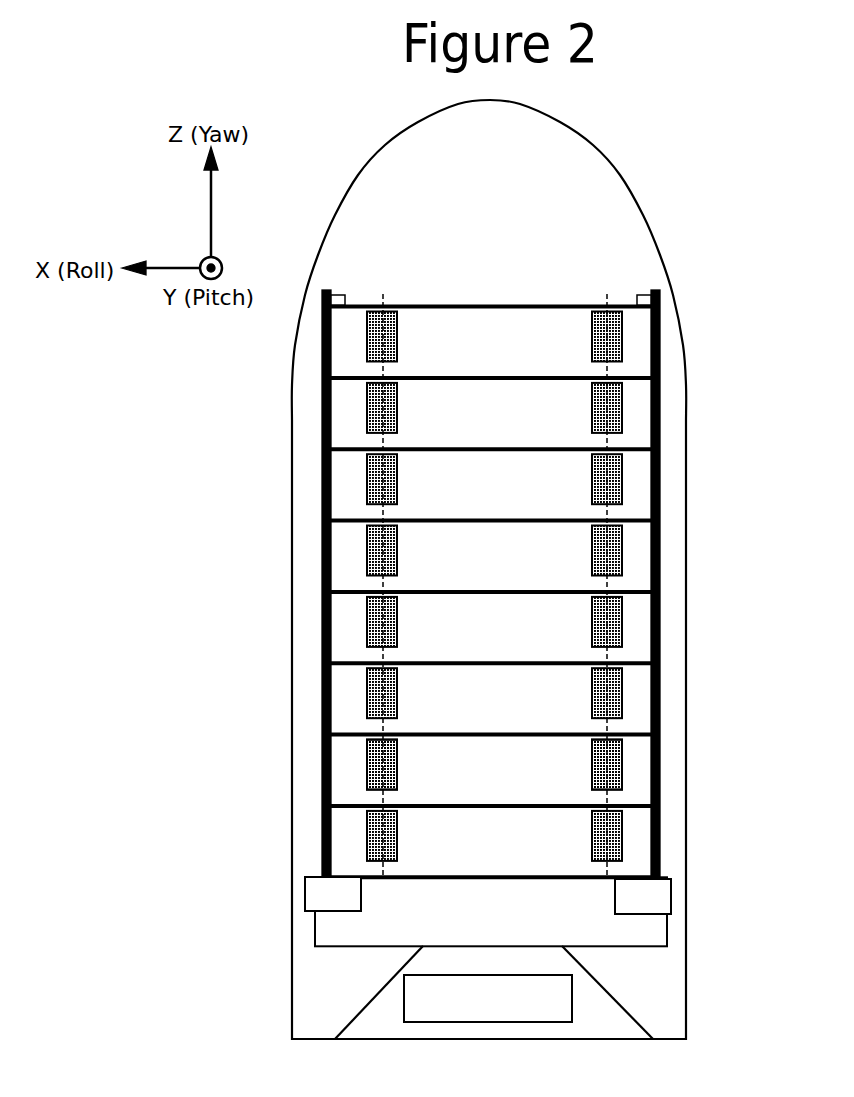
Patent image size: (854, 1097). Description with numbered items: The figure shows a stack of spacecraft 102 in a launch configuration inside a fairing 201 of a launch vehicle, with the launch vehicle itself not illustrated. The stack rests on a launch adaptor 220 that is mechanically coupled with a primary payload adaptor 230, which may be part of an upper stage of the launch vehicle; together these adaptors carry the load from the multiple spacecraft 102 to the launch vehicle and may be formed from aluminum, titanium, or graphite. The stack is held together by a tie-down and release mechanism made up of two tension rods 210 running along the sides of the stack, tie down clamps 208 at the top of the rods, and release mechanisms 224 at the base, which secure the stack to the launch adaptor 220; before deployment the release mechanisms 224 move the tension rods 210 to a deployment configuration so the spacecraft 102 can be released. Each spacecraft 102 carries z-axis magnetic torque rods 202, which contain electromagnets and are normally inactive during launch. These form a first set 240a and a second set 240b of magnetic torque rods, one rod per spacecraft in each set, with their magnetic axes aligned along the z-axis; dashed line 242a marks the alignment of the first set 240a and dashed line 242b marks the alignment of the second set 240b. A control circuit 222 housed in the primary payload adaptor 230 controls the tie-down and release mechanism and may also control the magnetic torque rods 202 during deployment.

The fairing 201 is at (651, 233).
The tension rods 210 is at (322, 446).
The spacecraft 102 is at (478, 341).
The tie down clamps 208 is at (337, 295).
The first set of magnetic torque rods 240a is at (388, 278).
The second set of magnetic torque rods 240b is at (598, 278).
The magnetic torque rods 202 is at (397, 321).
The dashed line 242a is at (367, 751).
The dashed line 242b is at (622, 771).
The launch adaptor 220 is at (471, 924).
The release mechanisms 224 is at (313, 906).
The primary payload adaptor 230 is at (590, 974).
The control circuit 222 is at (468, 1010).